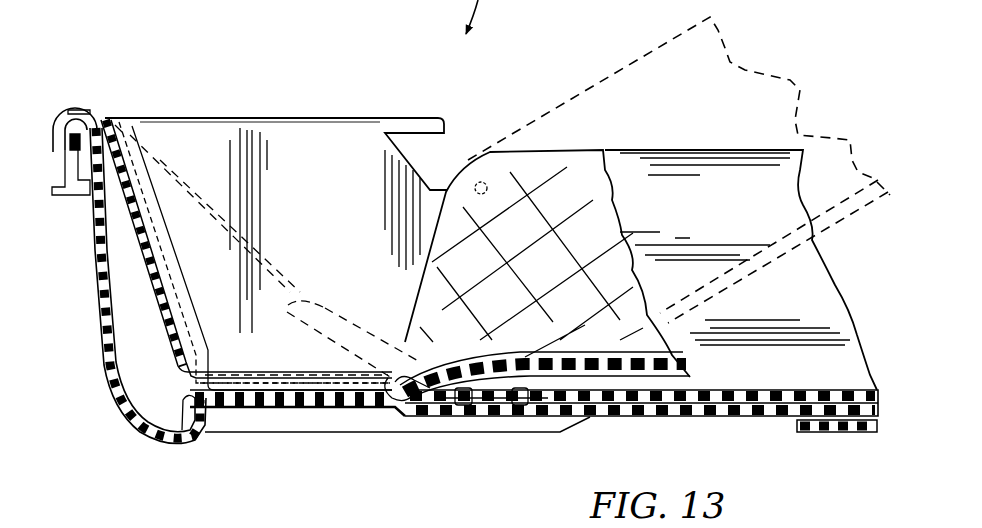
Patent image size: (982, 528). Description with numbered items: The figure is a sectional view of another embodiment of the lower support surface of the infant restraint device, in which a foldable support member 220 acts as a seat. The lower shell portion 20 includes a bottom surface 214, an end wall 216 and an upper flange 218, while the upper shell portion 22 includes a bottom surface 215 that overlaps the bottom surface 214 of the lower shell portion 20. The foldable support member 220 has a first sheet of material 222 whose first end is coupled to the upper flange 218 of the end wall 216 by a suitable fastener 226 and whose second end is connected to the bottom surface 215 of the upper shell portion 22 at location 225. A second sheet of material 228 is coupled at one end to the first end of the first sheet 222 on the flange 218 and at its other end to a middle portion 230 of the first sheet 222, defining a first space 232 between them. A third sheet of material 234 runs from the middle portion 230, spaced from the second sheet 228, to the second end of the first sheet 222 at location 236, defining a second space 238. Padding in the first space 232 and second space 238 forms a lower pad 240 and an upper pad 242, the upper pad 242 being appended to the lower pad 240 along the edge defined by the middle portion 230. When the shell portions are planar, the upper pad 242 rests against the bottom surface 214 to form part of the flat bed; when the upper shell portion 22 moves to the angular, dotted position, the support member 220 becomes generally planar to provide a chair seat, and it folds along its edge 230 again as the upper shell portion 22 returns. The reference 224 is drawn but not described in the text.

The lower shell portion 20 is at (115, 274).
The upper shell portion 22 is at (619, 97).
The bottom surface 214 is at (247, 397).
The bottom surface 215 is at (581, 404).
The end wall 216 is at (103, 294).
The upper flange 218 is at (67, 150).
The foldable support member 220 is at (177, 353).
The first sheet of material 222 is at (148, 262).
The upper hook 224 is at (67, 113).
The location 225 is at (503, 408).
The fastener 226 is at (80, 106).
The second sheet of material 228 is at (140, 183).
The middle portion 230 is at (192, 397).
The first space 232 is at (128, 158).
The third sheet of material 234 is at (302, 372).
The location 236 is at (393, 388).
The second space 238 is at (390, 400).
The lower pad 240 is at (168, 272).
The upper pad 242 is at (255, 387).